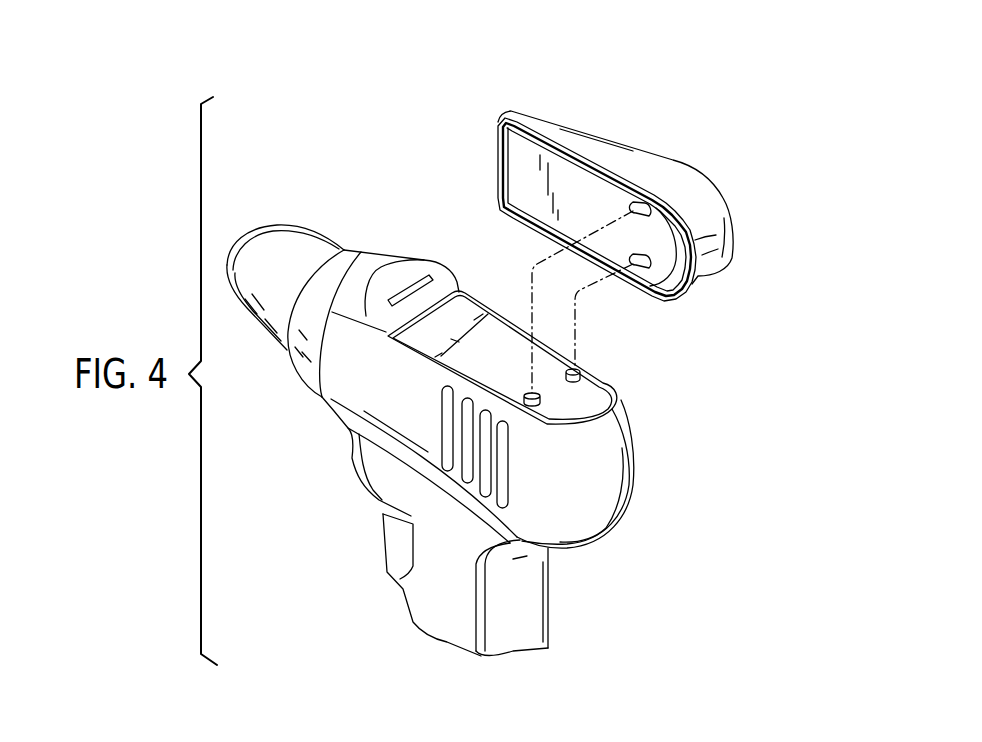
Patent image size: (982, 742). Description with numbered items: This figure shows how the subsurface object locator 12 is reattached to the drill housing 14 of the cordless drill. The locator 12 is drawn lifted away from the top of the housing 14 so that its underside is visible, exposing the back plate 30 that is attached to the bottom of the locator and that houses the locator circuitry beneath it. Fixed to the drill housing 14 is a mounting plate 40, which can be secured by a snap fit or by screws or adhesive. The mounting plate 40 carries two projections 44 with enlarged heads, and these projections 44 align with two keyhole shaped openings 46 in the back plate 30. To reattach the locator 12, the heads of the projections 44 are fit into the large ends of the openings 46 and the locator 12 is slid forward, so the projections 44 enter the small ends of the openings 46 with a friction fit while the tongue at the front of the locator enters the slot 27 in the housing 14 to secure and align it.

The subsurface object locator 12 is at (721, 228).
The drill housing 14 is at (633, 455).
The slot 27 is at (390, 286).
The back plate 30 is at (527, 220).
The mounting plate 40 is at (503, 305).
The projections 44 is at (573, 370).
The keyhole shaped openings 46 is at (642, 196).